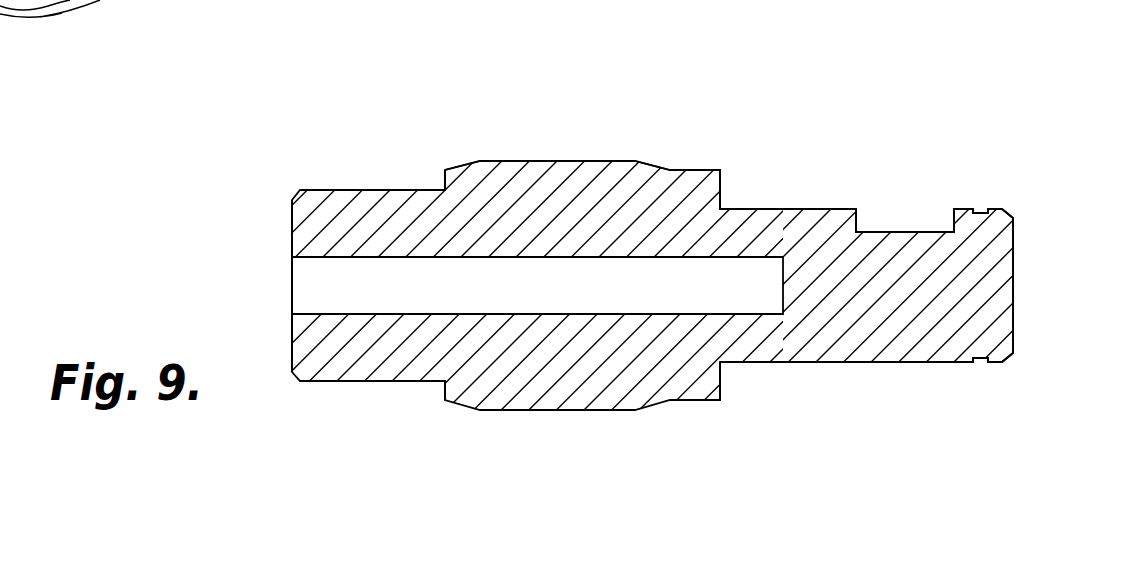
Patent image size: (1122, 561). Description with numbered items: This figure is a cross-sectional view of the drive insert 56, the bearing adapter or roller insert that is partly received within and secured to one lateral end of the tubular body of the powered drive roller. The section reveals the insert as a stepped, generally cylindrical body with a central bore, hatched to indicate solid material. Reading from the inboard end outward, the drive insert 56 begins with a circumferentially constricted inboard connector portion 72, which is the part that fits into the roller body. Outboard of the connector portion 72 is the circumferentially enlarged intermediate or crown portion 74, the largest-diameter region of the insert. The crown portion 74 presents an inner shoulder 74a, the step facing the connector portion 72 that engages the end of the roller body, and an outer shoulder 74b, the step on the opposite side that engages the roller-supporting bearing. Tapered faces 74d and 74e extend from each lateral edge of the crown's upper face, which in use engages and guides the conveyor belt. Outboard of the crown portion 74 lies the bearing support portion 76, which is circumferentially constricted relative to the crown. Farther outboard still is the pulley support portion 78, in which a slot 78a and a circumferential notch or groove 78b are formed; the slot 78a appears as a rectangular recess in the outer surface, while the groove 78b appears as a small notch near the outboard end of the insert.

The drive insert 56 is at (800, 71).
The inboard connector portion 72 is at (328, 190).
The crown portion 74 is at (540, 161).
The inner shoulder 74a is at (446, 178).
The outer shoulder 74b is at (722, 181).
The tapered face 74d is at (466, 164).
The tapered face 74e is at (657, 165).
The bearing support portion 76 is at (777, 209).
The pulley support portion 78 is at (963, 209).
The slot 78a is at (904, 218).
The circumferential notch or groove 78b is at (984, 208).